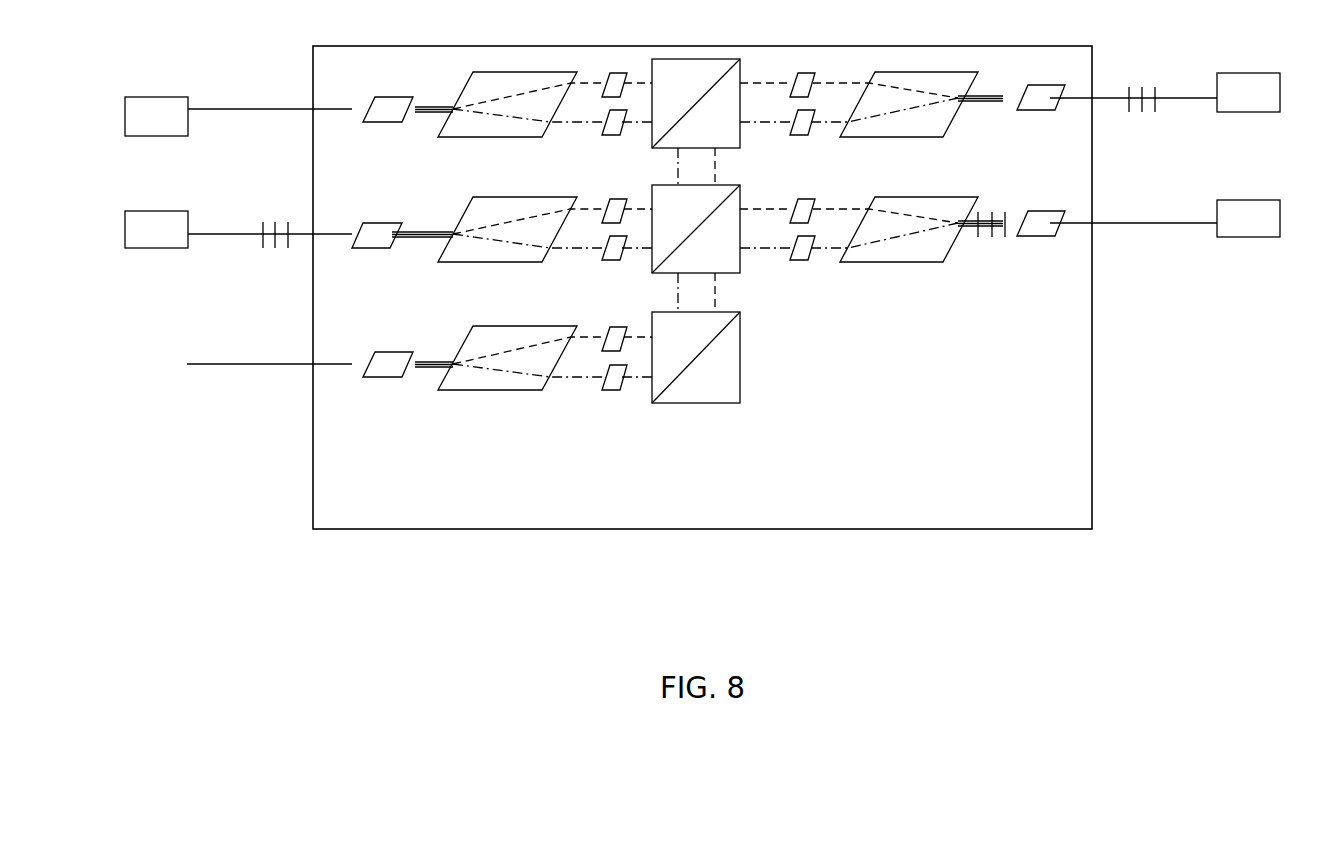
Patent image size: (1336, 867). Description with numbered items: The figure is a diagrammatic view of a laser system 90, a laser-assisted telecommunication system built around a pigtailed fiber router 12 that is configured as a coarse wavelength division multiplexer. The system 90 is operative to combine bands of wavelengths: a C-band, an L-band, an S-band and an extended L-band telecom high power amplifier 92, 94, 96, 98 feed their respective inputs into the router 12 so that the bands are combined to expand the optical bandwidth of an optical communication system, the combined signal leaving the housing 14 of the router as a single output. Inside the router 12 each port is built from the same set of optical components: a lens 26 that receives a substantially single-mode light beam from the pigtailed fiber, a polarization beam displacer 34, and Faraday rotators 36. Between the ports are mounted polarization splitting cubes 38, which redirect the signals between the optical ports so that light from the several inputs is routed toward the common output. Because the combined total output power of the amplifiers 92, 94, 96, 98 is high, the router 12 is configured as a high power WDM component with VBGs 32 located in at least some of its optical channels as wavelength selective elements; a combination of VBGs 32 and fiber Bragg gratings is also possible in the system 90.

The laser system 90 is at (422, 582).
The router 12 is at (623, 508).
The housing 14 is at (1129, 112).
The lens 26 is at (388, 108).
The VBG 32 is at (993, 215).
The polarization beam displacer 34 is at (543, 243).
The Faraday rotator 36 is at (802, 248).
The polarization splitting cube 38 is at (727, 377).
The C-band telecom high power amplifier 92 is at (188, 136).
The L-band telecom high power amplifier 94 is at (1245, 112).
The S-band telecom high power amplifier 96 is at (175, 237).
The extended L-band telecom high power amplifier 98 is at (1237, 200).